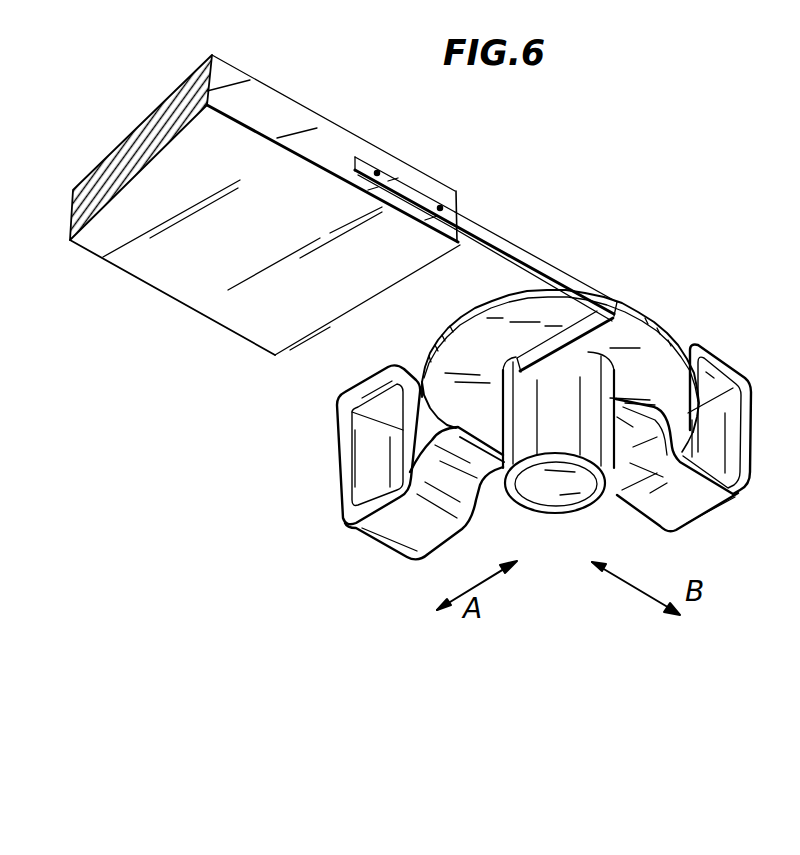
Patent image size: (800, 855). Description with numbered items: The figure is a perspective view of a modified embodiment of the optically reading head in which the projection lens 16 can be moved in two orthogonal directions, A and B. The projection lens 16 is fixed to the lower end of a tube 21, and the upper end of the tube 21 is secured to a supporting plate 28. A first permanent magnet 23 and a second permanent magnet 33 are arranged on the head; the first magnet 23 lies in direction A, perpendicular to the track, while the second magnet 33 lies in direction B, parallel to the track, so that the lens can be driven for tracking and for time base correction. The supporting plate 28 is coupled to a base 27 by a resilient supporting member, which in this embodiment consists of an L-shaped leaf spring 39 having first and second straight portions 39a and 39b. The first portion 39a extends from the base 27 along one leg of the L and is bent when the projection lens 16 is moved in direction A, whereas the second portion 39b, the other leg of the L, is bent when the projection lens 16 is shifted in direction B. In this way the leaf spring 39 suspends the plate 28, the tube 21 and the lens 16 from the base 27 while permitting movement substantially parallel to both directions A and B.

The base 27 is at (374, 150).
The L-shaped leaf spring 39 is at (540, 264).
The first straight portion 39a is at (493, 228).
The second straight portion 39b is at (612, 333).
The supporting plate 28 is at (432, 352).
The projection lens 16 is at (528, 490).
The tube 21 is at (602, 512).
The first permanent magnet 23 is at (338, 447).
The second permanent magnet 33 is at (751, 455).